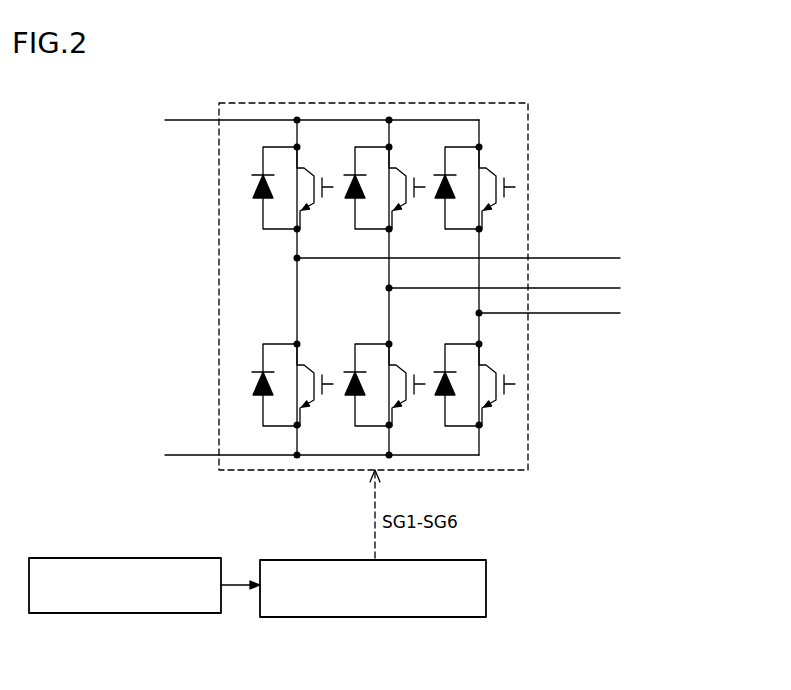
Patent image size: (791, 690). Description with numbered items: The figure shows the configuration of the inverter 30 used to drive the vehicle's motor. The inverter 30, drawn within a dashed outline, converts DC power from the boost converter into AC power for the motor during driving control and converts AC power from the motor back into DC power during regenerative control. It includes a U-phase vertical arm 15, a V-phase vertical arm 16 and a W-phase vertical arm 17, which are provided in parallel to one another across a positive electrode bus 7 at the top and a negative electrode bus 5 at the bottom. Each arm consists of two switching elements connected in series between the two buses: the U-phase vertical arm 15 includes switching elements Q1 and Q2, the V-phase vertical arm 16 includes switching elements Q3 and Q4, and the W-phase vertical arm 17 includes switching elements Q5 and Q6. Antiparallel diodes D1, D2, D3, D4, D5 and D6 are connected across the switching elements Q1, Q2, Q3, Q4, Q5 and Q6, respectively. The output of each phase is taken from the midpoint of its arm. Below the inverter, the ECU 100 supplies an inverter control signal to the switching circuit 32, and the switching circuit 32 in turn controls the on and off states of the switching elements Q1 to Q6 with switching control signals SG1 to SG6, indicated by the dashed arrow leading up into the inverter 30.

The positive electrode bus 7 is at (246, 118).
The negative electrode bus 5 is at (250, 458).
The inverter 30 is at (368, 102).
The U-phase vertical arm 15 is at (283, 267).
The V-phase vertical arm 16 is at (377, 292).
The W-phase vertical arm 17 is at (470, 319).
The switching element Q1 is at (315, 186).
The switching element Q2 is at (315, 382).
The switching element Q3 is at (407, 186).
The switching element Q4 is at (407, 382).
The switching element Q5 is at (497, 186).
The switching element Q6 is at (497, 382).
The antiparallel diode D1 is at (265, 188).
The antiparallel diode D2 is at (265, 385).
The antiparallel diode D3 is at (356, 191).
The antiparallel diode D4 is at (356, 387).
The antiparallel diode D5 is at (447, 191).
The antiparallel diode D6 is at (447, 387).
The ECU 100 is at (130, 614).
The switching circuit 32 is at (372, 618).